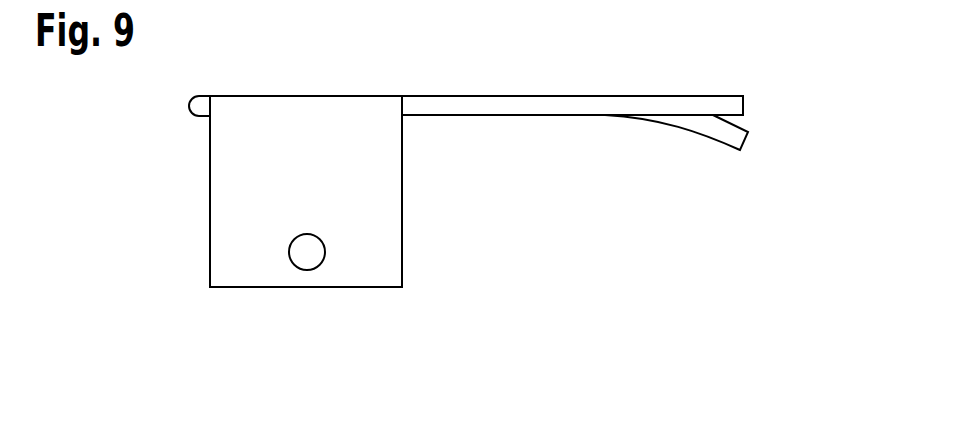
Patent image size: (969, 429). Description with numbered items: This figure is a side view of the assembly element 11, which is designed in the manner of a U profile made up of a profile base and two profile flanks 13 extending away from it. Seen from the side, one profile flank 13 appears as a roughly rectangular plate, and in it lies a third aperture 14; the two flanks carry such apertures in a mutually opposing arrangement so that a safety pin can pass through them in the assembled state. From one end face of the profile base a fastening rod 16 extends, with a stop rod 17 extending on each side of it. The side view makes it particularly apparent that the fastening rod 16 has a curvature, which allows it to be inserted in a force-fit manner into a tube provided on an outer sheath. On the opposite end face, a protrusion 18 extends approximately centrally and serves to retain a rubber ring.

The assembly element 11 is at (162, 164).
The profile flank 13 is at (228, 228).
The third aperture 14 is at (305, 257).
The fastening rod 16 is at (730, 133).
The stop rod 17 is at (728, 108).
The protrusion 18 is at (193, 108).